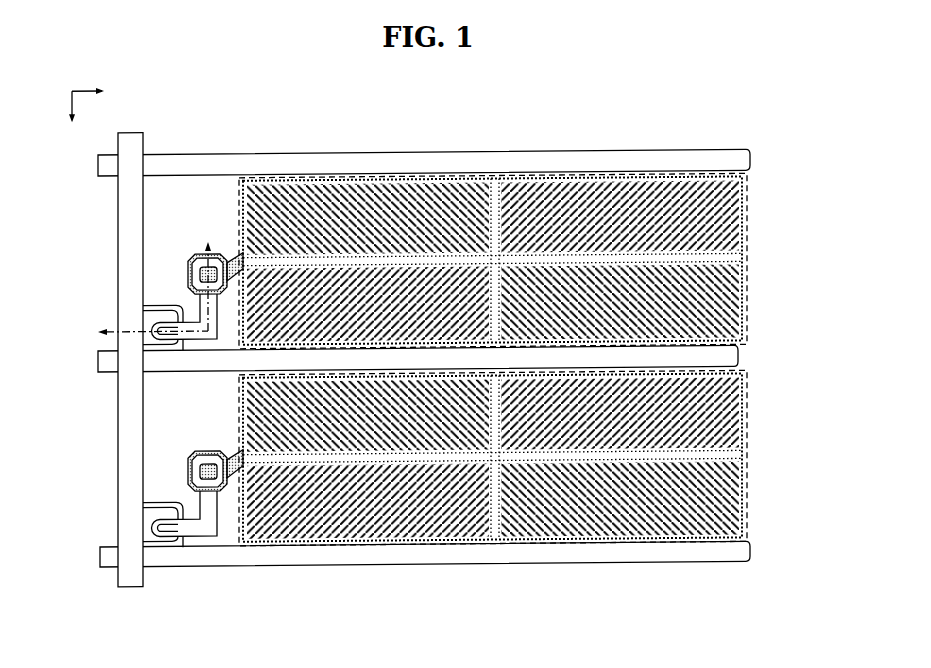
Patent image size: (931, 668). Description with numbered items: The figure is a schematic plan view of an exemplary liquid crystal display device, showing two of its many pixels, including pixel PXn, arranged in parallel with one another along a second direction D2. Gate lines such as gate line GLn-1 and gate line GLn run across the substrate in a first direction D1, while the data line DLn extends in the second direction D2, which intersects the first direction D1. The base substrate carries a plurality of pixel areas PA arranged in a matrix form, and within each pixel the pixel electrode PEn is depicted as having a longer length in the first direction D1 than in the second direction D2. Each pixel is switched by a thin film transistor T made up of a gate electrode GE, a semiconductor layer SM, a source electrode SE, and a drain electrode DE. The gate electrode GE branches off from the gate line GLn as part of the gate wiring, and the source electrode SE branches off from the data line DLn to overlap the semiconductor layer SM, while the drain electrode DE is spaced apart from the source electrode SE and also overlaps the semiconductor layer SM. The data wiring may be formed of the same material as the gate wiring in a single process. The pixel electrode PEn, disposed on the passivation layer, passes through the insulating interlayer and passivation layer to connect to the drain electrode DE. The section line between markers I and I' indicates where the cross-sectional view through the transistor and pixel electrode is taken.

The first direction D1 is at (97, 92).
The second direction D2 is at (70, 115).
The gate line GLn-1 is at (98, 168).
The gate line GLn is at (98, 364).
The data line DLn is at (130, 588).
The pixel PXn is at (755, 230).
The pixel electrode PEn is at (742, 267).
The pixel area PA is at (750, 298).
The thin film transistor T is at (193, 535).
The source electrode SE is at (157, 548).
The semiconductor layer SM is at (177, 538).
The gate electrode GE is at (187, 541).
The drain electrode DE is at (150, 598).
The section line I-I' I is at (148, 332).
The section line I- I' is at (207, 278).